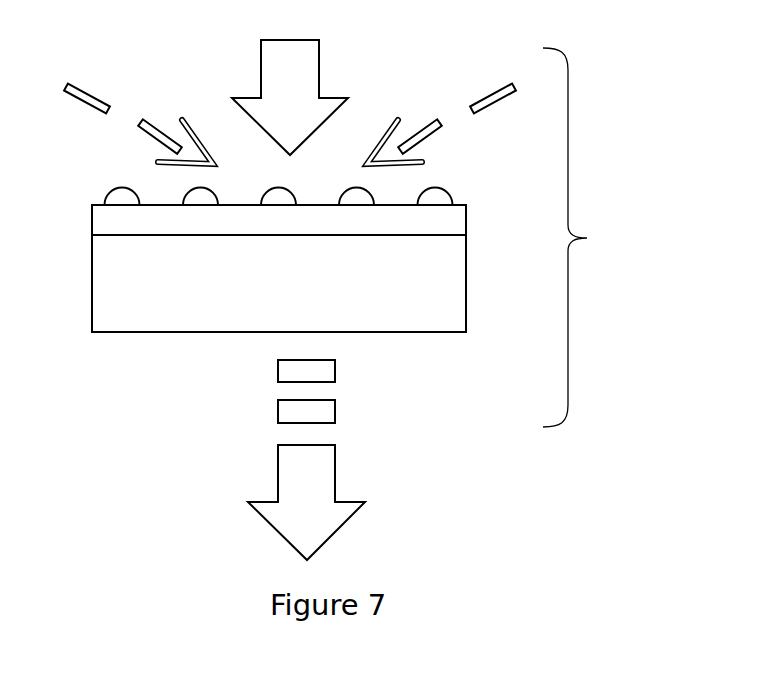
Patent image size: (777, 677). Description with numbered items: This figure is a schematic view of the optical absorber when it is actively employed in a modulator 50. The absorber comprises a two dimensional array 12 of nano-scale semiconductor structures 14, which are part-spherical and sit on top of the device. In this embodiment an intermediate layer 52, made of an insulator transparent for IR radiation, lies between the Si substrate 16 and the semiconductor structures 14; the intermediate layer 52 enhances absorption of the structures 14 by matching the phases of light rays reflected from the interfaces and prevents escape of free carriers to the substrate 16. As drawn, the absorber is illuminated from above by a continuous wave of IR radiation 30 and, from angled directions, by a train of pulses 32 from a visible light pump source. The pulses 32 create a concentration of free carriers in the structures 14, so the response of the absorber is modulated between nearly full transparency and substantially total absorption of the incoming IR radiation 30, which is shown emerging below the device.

The two dimensional array 12 is at (320, 228).
The nano-scale semiconductor structures 14 is at (123, 190).
The Si substrate 16 is at (450, 282).
The continuous wave of IR radiation 30 is at (318, 68).
The train of pulses 32 is at (157, 127).
The modulator 50 is at (583, 237).
The intermediate layer 52 is at (450, 222).